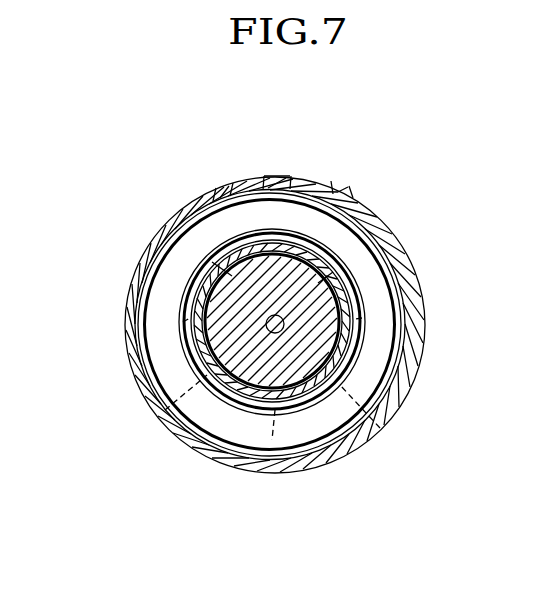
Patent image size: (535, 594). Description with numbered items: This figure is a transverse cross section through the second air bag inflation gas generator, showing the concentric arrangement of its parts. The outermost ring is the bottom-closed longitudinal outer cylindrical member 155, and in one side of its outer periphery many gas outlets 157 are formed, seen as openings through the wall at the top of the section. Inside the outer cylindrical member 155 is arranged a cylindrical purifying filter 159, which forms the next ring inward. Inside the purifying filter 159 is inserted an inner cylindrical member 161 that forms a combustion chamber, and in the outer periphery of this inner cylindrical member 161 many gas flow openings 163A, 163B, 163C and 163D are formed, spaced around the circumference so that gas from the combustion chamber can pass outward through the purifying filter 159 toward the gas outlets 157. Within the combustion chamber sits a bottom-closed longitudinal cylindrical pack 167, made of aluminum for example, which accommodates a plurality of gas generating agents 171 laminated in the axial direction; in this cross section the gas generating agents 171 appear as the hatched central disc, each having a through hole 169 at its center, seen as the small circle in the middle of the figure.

The outer cylindrical member 155 is at (353, 205).
The gas outlets 157 is at (300, 183).
The purifying filter 159 is at (388, 362).
The inner cylindrical member 161 is at (368, 300).
The gas flow opening 163A is at (212, 262).
The gas flow opening 163B is at (183, 322).
The gas flow opening 163C is at (165, 410).
The gas flow opening 163D is at (272, 440).
The cylindrical pack 167 is at (332, 298).
The through hole 169 is at (245, 345).
The gas generating agents 171 is at (290, 380).